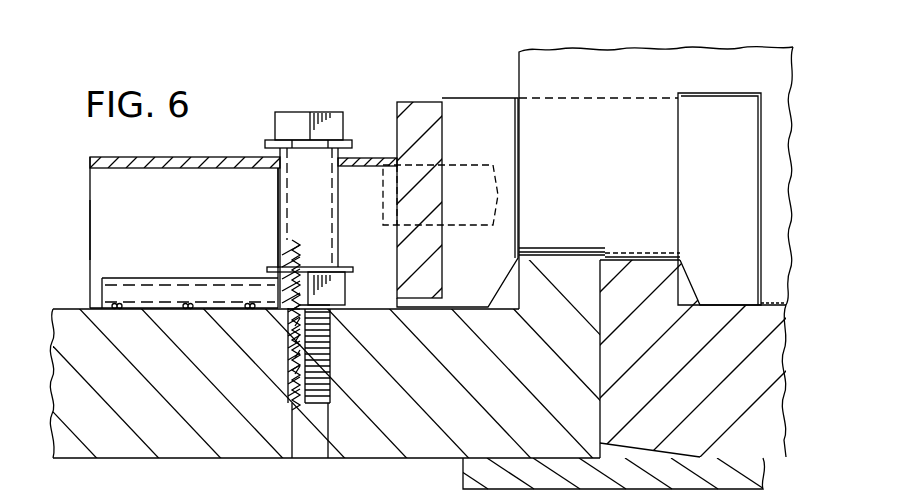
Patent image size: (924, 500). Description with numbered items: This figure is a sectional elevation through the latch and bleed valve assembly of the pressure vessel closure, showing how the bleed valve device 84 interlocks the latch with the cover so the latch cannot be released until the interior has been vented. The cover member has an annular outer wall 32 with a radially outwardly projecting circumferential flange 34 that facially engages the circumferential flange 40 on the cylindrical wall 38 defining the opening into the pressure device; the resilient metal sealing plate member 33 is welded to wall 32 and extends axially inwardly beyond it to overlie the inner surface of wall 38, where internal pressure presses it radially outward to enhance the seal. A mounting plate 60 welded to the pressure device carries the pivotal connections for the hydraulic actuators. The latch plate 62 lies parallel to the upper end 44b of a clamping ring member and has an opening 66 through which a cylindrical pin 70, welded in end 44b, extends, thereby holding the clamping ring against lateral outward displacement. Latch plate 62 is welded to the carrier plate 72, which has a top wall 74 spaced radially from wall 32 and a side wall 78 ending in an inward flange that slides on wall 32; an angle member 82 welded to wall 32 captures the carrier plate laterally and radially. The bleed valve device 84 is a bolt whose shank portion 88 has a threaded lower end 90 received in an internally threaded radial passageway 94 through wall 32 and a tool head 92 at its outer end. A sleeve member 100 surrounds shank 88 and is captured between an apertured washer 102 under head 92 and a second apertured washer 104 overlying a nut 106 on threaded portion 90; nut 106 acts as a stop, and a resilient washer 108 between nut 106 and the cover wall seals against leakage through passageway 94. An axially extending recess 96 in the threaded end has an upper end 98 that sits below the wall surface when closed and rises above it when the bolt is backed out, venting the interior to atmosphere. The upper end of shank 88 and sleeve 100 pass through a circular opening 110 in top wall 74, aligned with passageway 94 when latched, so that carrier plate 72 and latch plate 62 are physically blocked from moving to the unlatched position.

The annular outer wall 32 is at (78, 320).
The resilient metal sealing plate member 33 is at (468, 463).
The circumferential flange 34 is at (562, 272).
The cylindrical wall 38 is at (722, 315).
The circumferential flange 40 is at (634, 268).
The upper end of clamping ring member 44b is at (483, 108).
The mounting plate 60 is at (662, 58).
The latch plate 62 is at (425, 105).
The opening 66 is at (392, 226).
The cylindrical pin 70 is at (370, 158).
The carrier plate 72 is at (80, 198).
The top wall 74 is at (103, 162).
The side wall 78 is at (105, 236).
The angle member 82 is at (184, 278).
The bleed valve device 84 is at (305, 171).
The shank portion 88 is at (300, 207).
The threaded lower end 90 is at (330, 370).
The tool head 92 is at (296, 118).
The radial passageway 94 is at (325, 440).
The axially extending recess 96 is at (294, 372).
The upper end of recess 98 is at (290, 340).
The sleeve member 100 is at (278, 178).
The apertured washer 102 is at (272, 143).
The second apertured washer 104 is at (268, 267).
The nut 106 is at (272, 292).
The resilient washer 108 is at (288, 312).
The circular opening 110 is at (340, 166).